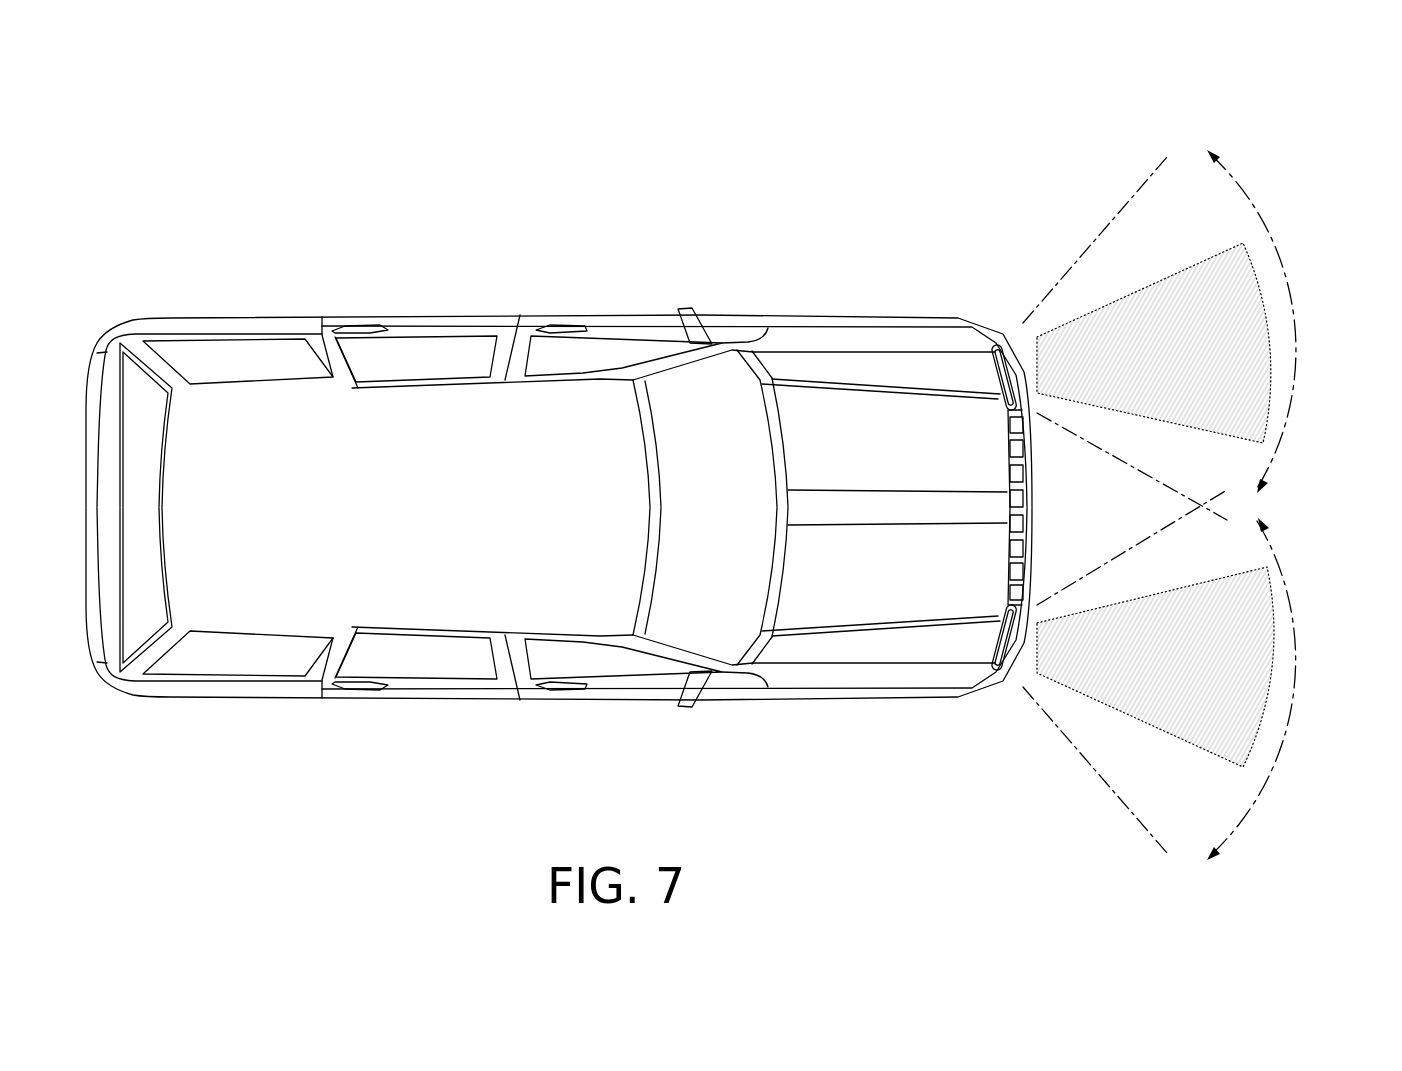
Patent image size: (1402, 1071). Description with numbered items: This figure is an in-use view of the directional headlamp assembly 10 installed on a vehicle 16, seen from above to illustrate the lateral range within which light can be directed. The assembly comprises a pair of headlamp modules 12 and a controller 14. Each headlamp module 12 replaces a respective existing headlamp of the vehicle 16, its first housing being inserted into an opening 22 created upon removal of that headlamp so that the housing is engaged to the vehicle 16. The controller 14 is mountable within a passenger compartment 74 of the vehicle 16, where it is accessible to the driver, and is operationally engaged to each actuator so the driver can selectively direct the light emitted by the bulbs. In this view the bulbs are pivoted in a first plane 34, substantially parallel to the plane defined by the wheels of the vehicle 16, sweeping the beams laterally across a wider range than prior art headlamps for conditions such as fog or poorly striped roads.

The directional headlamp assembly 10 is at (840, 175).
The headlamp module 12 is at (1028, 626).
The controller 14 is at (695, 424).
The vehicle 16 is at (513, 305).
The opening 22 is at (984, 372).
The first plane 34 is at (1308, 652).
The passenger compartment 74 is at (569, 424).